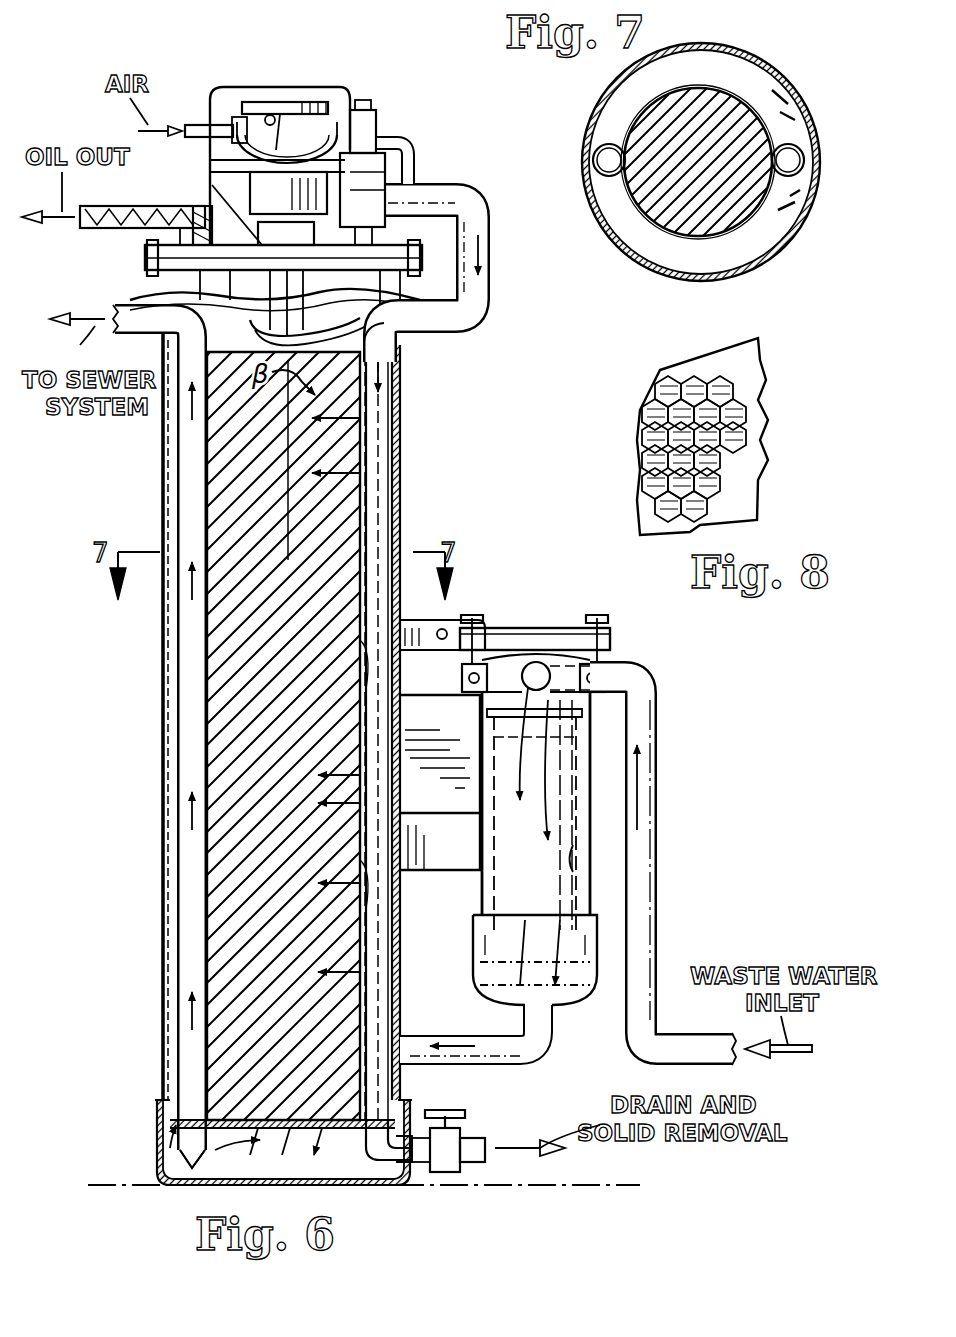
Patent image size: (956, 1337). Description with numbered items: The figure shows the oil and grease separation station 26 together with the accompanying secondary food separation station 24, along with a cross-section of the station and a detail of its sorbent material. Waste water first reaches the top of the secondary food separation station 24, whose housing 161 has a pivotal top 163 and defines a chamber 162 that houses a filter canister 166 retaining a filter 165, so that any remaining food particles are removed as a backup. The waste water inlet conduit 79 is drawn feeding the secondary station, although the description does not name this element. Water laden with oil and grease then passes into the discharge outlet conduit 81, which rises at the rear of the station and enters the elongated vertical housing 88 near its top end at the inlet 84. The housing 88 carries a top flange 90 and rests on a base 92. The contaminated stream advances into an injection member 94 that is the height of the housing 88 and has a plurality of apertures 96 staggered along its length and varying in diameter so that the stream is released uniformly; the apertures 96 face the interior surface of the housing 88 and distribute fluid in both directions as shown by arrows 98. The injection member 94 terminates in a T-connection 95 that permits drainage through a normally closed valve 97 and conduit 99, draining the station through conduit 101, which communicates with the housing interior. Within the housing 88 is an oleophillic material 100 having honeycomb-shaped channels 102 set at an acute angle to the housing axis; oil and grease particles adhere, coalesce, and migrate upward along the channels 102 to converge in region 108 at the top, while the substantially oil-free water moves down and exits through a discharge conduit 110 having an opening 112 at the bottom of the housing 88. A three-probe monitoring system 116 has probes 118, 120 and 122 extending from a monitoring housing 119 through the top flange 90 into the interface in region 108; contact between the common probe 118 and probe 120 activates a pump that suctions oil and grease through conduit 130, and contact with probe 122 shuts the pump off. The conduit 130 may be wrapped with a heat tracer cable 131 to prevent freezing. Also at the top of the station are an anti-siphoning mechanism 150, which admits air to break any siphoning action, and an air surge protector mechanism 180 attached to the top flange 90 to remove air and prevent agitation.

In FIG. 6, the secondary food separation station 24 is at (572, 632).
In FIG. 6, the oil and grease separation station 26 is at (410, 526).
In FIG. 6, the waste water inlet pipe 79 is at (657, 703).
In FIG. 6, the discharge outlet conduit 81 is at (472, 196).
In FIG. 6, the inlet 84 is at (398, 350).
In FIG. 6, the vertical housing 88 is at (163, 433).
In FIG. 7, the vertical housing 88 is at (600, 108).
In FIG. 6, the top flange 90 is at (180, 242).
In FIG. 6, the base 92 is at (160, 1146).
In FIG. 6, the injection member 94 is at (375, 503).
In FIG. 7, the injection member 94 is at (772, 150).
In FIG. 6, the T-connection 95 is at (388, 1158).
In FIG. 6, the apertures 96 is at (362, 473).
In FIG. 7, the apertures 96 is at (805, 162).
In FIG. 6, the valve 97 is at (446, 1172).
In FIG. 7, the arrows 98 is at (792, 98).
In FIG. 6, the conduit 99 is at (474, 1162).
In FIG. 6, the oleophillic material 100 is at (302, 600).
In FIG. 7, the oleophillic material 100 is at (724, 177).
In FIG. 8, the oleophillic material 100 is at (700, 365).
In FIG. 6, the conduit 101 is at (366, 1150).
In FIG. 6, the channels 102 is at (222, 796).
In FIG. 8, the channels 102 is at (645, 438).
In FIG. 6, the region 108 is at (190, 293).
In FIG. 6, the discharge conduit 110 is at (186, 520).
In FIG. 6, the opening 112 is at (190, 1168).
In FIG. 6, the three-probe monitoring system 116 is at (258, 190).
In FIG. 6, the probe 118 is at (445, 320).
In FIG. 6, the monitoring housing 119 is at (203, 124).
In FIG. 6, the probe 120 is at (445, 296).
In FIG. 6, the probe 122 is at (320, 277).
In FIG. 6, the conduit 130 is at (92, 229).
In FIG. 6, the heat tracer cable 131 is at (135, 206).
In FIG. 6, the anti-siphoning mechanism 150 is at (280, 88).
In FIG. 6, the housing 161 is at (578, 826).
In FIG. 6, the chamber 162 is at (560, 800).
In FIG. 6, the pivotal top 163 is at (520, 628).
In FIG. 6, the filter 165 is at (600, 836).
In FIG. 6, the filter canister 166 is at (575, 897).
In FIG. 6, the air surge protector mechanism 180 is at (390, 140).